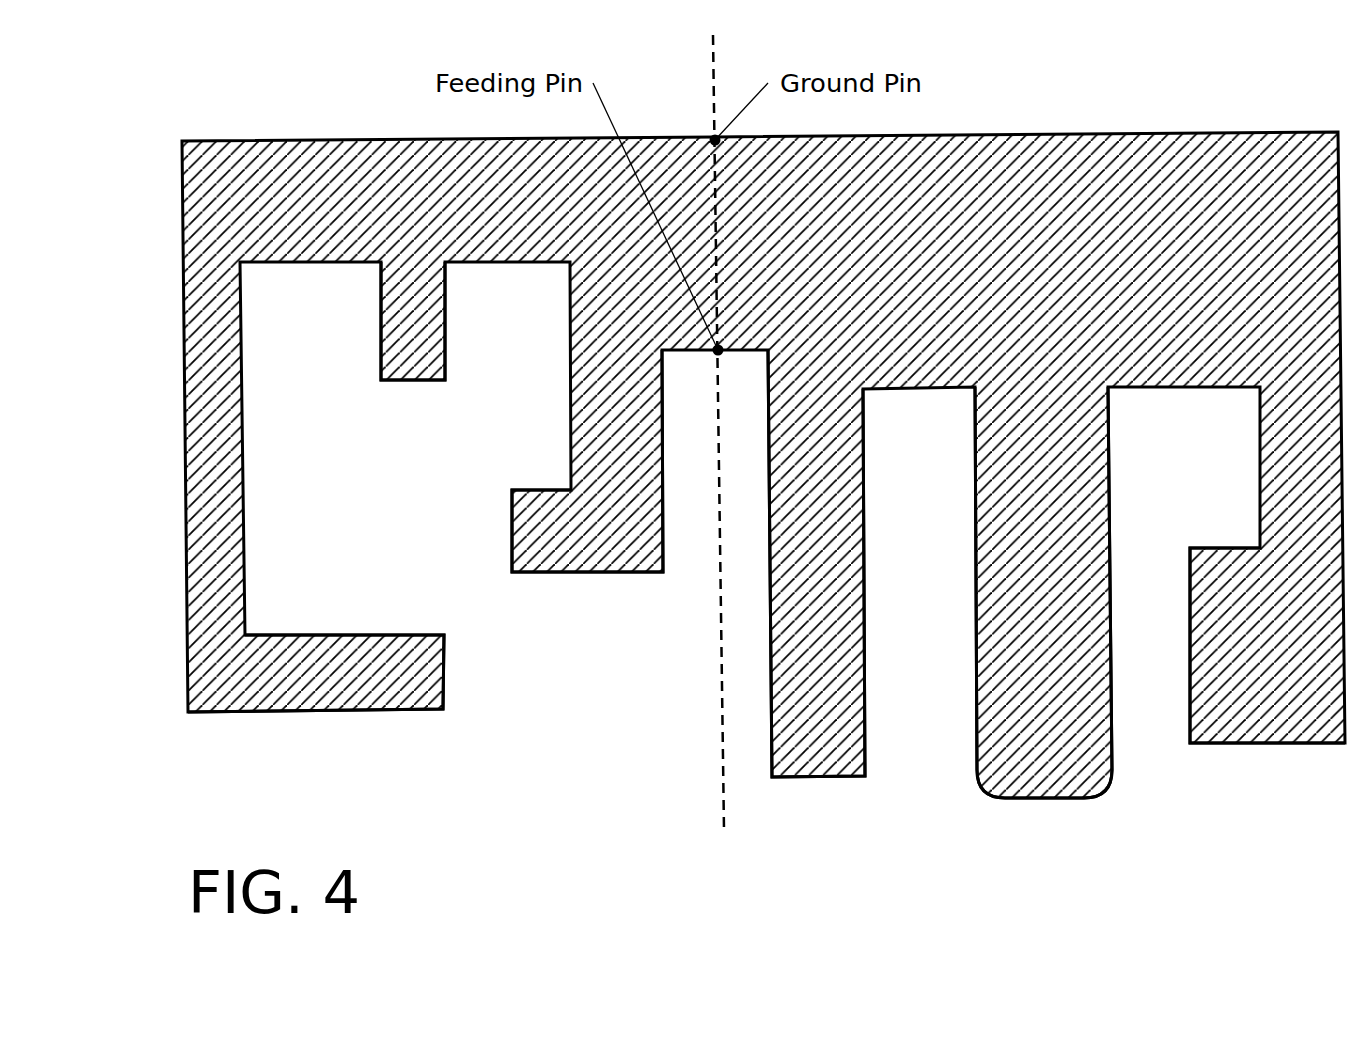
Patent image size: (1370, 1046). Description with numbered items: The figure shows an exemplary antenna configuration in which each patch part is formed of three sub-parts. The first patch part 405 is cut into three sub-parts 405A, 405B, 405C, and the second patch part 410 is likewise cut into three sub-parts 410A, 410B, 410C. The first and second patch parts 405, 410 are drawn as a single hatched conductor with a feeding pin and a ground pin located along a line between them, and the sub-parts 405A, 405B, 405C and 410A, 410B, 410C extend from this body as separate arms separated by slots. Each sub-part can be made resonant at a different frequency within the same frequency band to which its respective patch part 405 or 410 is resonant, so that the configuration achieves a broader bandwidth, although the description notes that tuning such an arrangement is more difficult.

The first patch part 405 is at (1012, 133).
The sub-part of first patch part 405A is at (843, 778).
The sub-part of first patch part 405B is at (1058, 800).
The sub-part of first patch part 405C is at (1287, 745).
The second patch part 410 is at (278, 138).
The sub-part of second patch part 410A is at (418, 712).
The sub-part of second patch part 410B is at (415, 382).
The sub-part of second patch part 410C is at (638, 573).